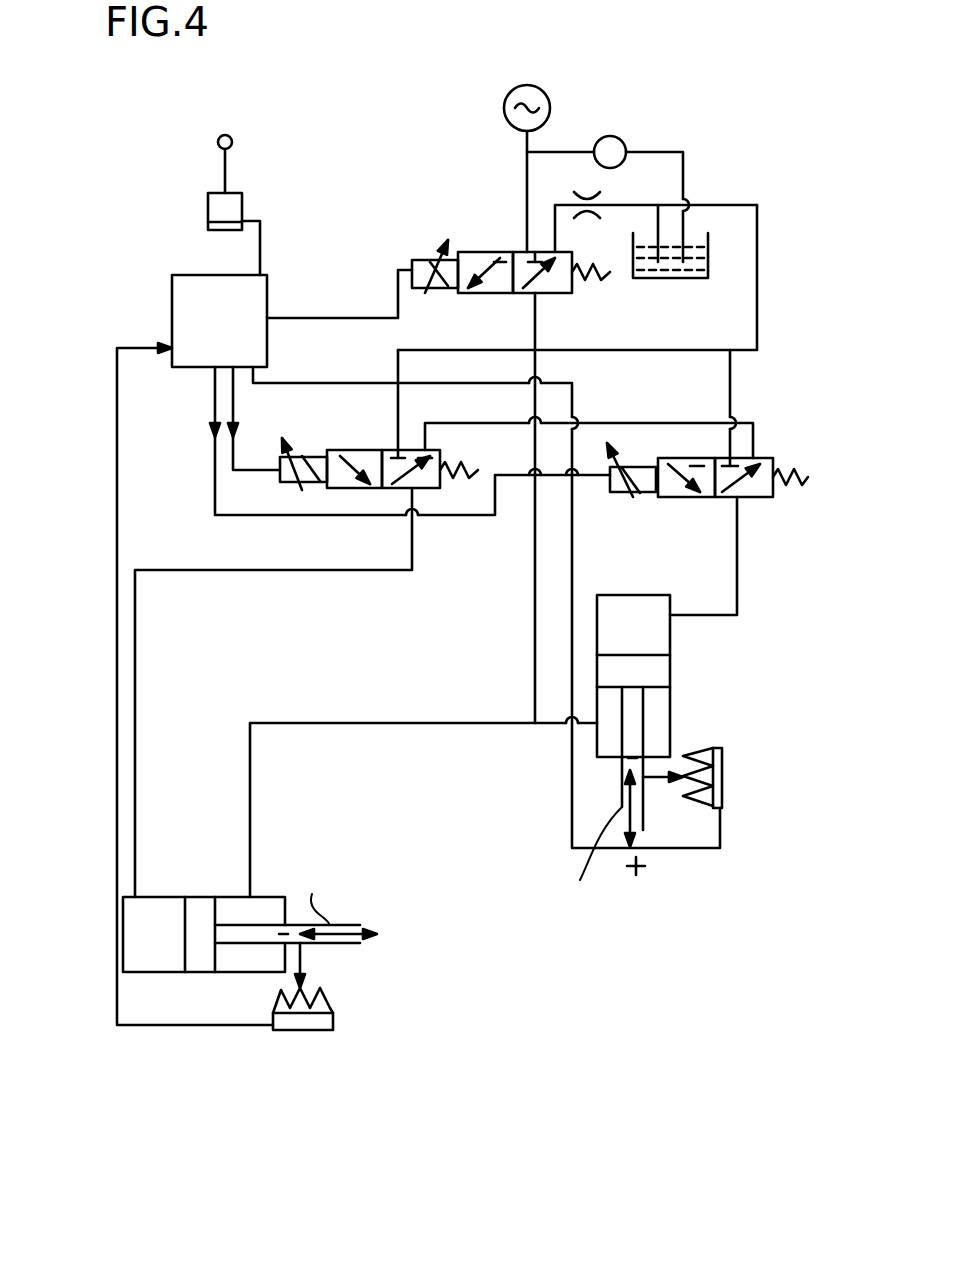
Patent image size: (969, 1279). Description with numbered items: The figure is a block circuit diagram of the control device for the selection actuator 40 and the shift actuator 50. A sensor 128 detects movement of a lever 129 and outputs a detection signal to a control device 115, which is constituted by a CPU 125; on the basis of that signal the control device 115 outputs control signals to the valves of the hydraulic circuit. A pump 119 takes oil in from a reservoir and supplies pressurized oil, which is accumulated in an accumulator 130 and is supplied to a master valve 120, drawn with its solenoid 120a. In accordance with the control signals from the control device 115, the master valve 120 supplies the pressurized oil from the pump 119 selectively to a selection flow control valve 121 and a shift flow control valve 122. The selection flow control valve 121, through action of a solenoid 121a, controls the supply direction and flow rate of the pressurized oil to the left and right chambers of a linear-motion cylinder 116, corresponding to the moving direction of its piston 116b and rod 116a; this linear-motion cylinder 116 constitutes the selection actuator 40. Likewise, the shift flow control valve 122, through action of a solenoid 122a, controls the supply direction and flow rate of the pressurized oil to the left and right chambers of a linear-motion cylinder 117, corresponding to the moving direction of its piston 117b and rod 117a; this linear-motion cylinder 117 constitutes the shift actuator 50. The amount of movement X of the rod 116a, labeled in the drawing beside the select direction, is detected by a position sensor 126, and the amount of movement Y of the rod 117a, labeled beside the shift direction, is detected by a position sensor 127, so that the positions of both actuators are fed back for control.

The selection actuator 40 is at (408, 1048).
The shift actuator 50 is at (768, 890).
The control device 115 is at (130, 292).
The linear-motion cylinder 116 is at (280, 867).
The rod 116a is at (347, 925).
The piston 116b is at (200, 900).
The linear-motion cylinder 117 is at (703, 704).
The rod 117a is at (667, 725).
The piston 117b is at (667, 671).
The pump 119 is at (626, 132).
The master valve 120 is at (481, 206).
The solenoid 120a is at (412, 266).
The selection flow control valve 121 is at (360, 435).
The solenoid 121a is at (285, 445).
The shift flow control valve 122 is at (700, 457).
The solenoid 122a is at (650, 495).
The CPU 125 is at (223, 321).
The position sensor 126 is at (333, 1018).
The position sensor 127 is at (722, 780).
The sensor 128 is at (208, 228).
The lever 129 is at (233, 151).
The accumulator 130 is at (551, 108).